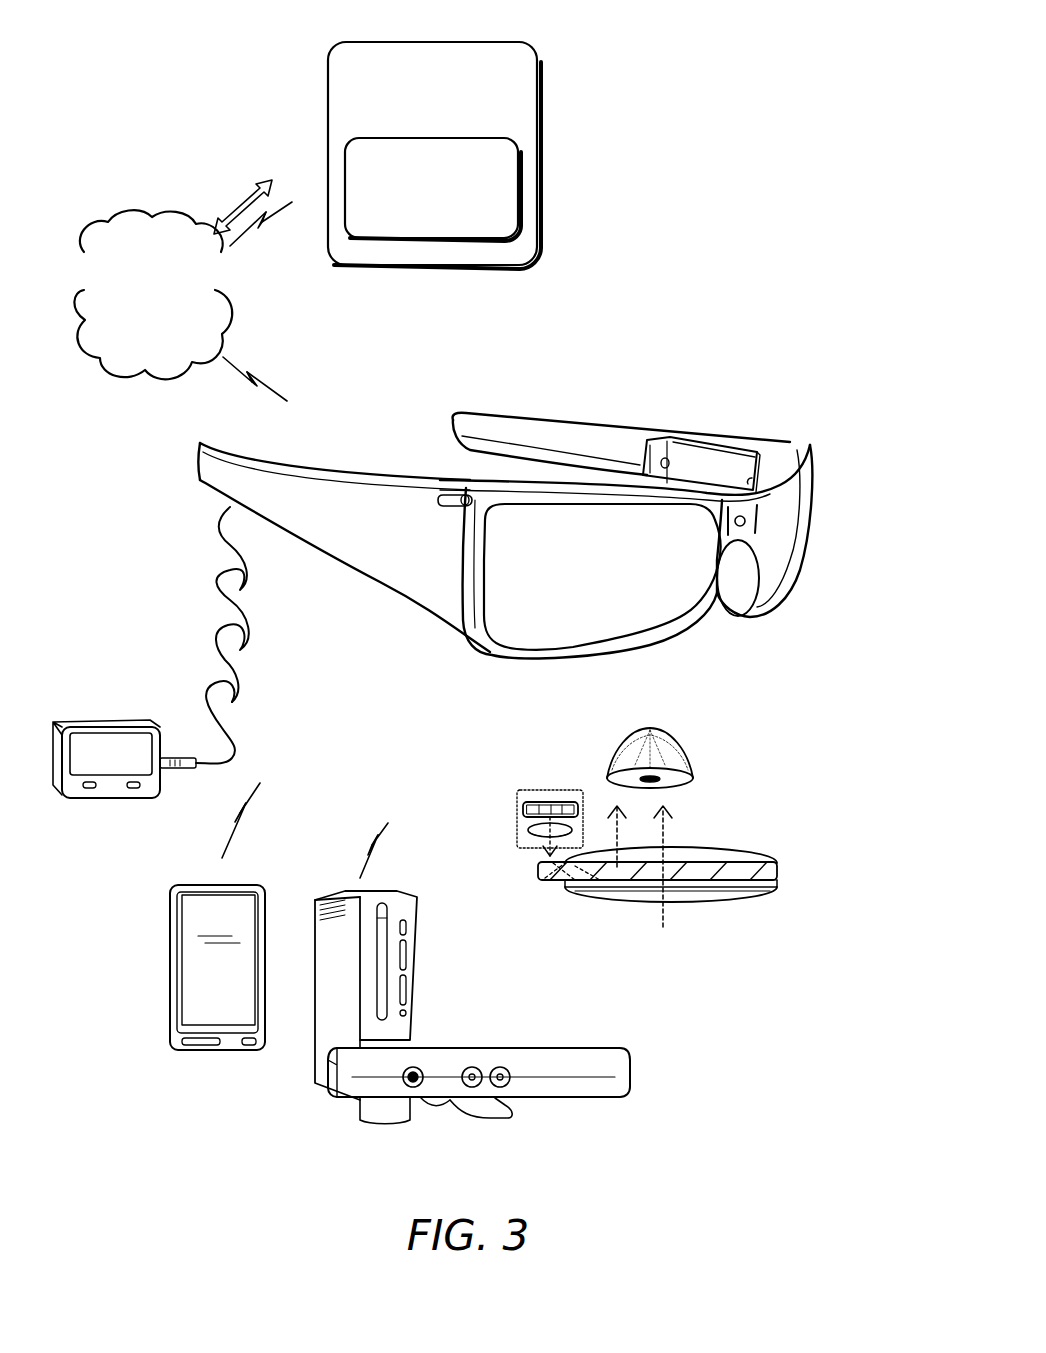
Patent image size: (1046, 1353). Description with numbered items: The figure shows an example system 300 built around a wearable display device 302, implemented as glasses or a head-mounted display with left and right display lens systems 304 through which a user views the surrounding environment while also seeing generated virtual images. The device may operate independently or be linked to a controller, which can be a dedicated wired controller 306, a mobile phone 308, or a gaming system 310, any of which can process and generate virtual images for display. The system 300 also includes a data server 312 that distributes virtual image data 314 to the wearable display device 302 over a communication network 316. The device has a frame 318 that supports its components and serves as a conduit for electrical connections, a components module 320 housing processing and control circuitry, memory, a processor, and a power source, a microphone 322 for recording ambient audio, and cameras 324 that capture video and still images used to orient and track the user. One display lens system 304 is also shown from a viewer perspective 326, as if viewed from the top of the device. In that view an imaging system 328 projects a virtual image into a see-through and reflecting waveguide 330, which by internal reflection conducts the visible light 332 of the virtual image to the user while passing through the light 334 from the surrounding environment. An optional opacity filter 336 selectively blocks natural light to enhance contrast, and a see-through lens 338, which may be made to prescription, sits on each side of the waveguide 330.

The system 300 is at (741, 72).
The wearable display device 302 is at (677, 351).
The display lens system 304 is at (653, 610).
The controller 306 is at (93, 834).
The mobile phone 308 is at (205, 1084).
The gaming system 310 is at (455, 1154).
The data server 312 is at (376, 88).
The virtual image data 314 is at (415, 223).
The communication network 316 is at (83, 284).
The frame 318 is at (393, 557).
The components module 320 is at (753, 452).
The microphone 322 is at (744, 527).
The camera 324 is at (443, 490).
The viewer perspective 326 is at (565, 398).
The imaging system 328 is at (537, 790).
The see-through and reflecting waveguide 330 is at (740, 882).
The visible light 332 is at (603, 812).
The light from the surrounding environment 334 is at (645, 954).
The opacity filter 336 is at (680, 888).
The see-through lens 338 is at (728, 850).